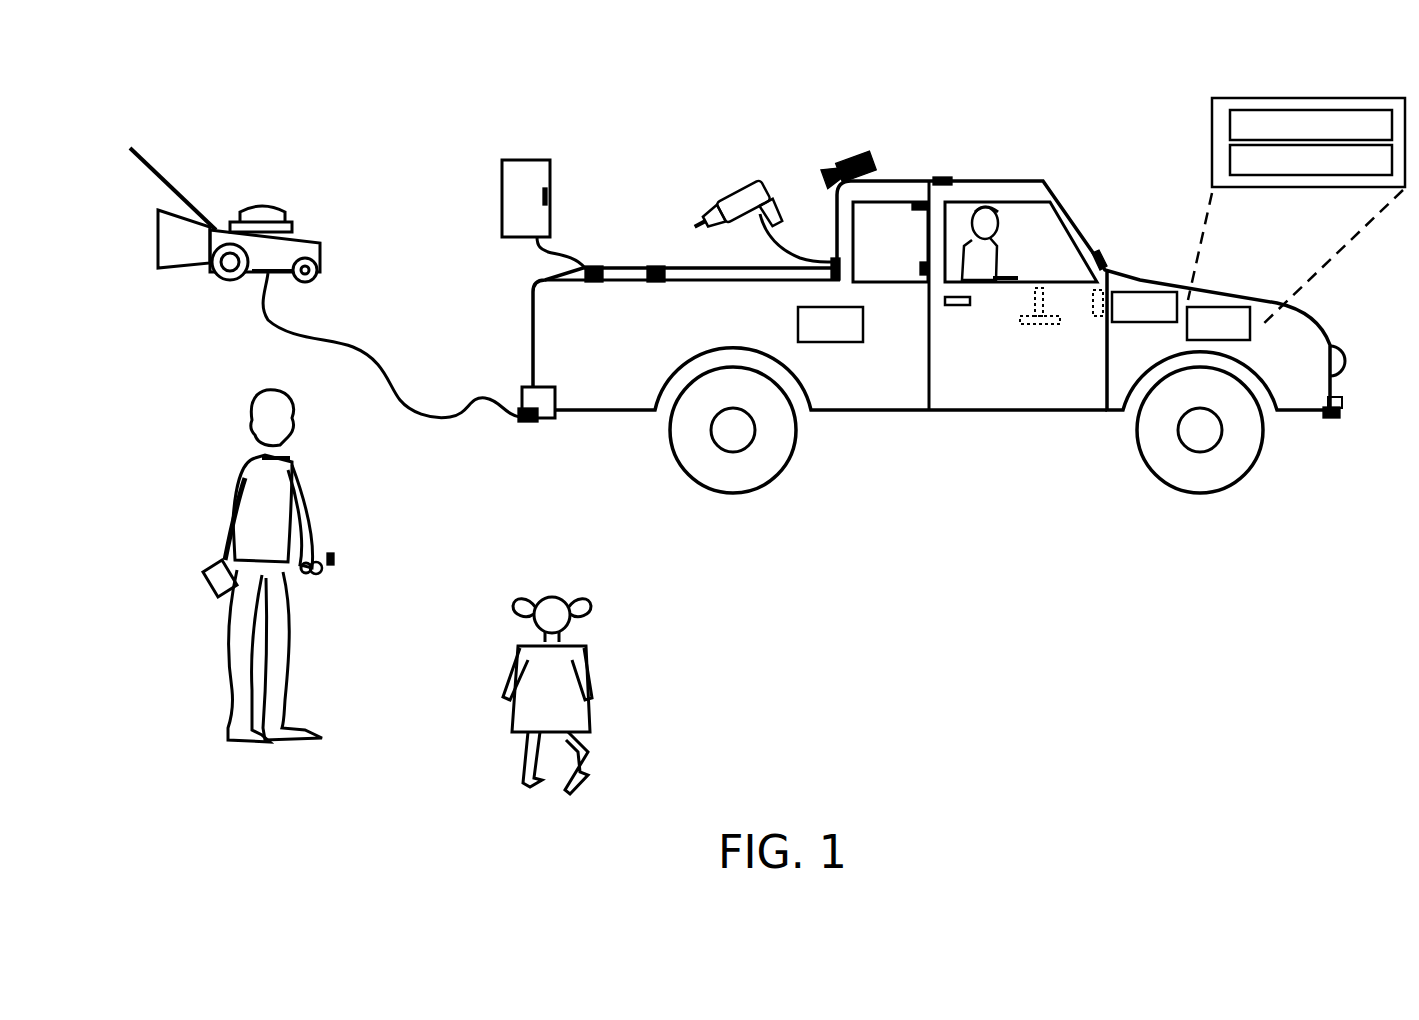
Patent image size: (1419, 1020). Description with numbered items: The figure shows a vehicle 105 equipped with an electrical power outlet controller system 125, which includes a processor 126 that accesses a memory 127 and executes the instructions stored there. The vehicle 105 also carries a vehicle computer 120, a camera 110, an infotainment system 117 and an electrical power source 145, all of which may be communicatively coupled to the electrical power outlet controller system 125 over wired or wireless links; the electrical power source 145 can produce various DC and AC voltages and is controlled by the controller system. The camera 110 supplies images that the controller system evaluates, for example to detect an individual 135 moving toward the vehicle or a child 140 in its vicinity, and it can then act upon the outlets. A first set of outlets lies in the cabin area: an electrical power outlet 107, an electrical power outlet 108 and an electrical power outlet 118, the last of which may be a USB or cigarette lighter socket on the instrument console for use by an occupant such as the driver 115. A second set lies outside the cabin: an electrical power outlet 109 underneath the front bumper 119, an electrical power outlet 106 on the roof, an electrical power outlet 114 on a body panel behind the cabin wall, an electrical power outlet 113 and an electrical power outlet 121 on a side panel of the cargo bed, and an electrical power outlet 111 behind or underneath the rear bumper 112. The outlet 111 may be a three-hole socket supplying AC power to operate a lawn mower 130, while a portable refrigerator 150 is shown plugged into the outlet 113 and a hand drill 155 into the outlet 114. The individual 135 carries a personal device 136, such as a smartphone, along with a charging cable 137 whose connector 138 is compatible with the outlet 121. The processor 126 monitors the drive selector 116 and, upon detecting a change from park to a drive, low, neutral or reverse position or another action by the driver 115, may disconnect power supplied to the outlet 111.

The vehicle 105 is at (712, 117).
The electrical power outlet 106 is at (945, 177).
The electrical power outlet 107 is at (912, 208).
The electrical power outlet 108 is at (920, 268).
The electrical power outlet 109 is at (1332, 418).
The camera 110 is at (857, 150).
The electrical power outlet 111 is at (523, 426).
The rear bumper 112 is at (520, 395).
The electrical power outlet 113 is at (594, 266).
The electrical power outlet 114 is at (831, 260).
The driver 115 is at (1004, 255).
The drive selector 116 is at (1014, 322).
The infotainment system 117 is at (1108, 262).
The electrical power outlet 118 is at (1093, 318).
The front bumper 119 is at (1342, 402).
The vehicle computer 120 is at (1144, 307).
The electrical power outlet 121 is at (656, 266).
The electrical power outlet controller system 125 is at (1295, 265).
The processor 126 is at (1308, 142).
The memory 127 is at (1311, 160).
The lawn mower 130 is at (310, 206).
The individual 135 is at (220, 436).
The personal device 136 is at (220, 600).
The charging cable 137 is at (322, 575).
The connector 138 is at (352, 542).
The child 140 is at (620, 630).
The electrical power source 145 is at (830, 324).
The portable refrigerator 150 is at (485, 145).
The hand drill 155 is at (752, 182).